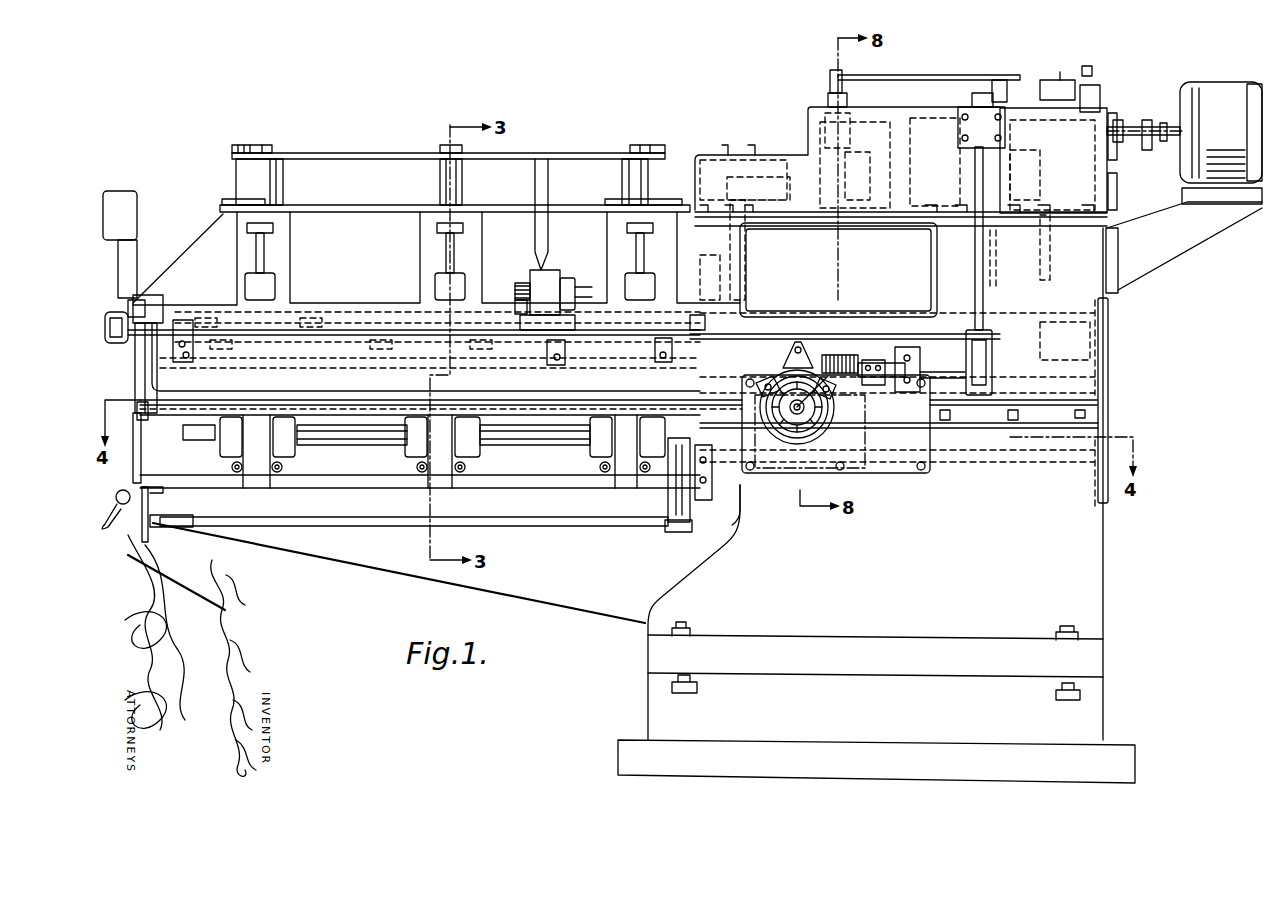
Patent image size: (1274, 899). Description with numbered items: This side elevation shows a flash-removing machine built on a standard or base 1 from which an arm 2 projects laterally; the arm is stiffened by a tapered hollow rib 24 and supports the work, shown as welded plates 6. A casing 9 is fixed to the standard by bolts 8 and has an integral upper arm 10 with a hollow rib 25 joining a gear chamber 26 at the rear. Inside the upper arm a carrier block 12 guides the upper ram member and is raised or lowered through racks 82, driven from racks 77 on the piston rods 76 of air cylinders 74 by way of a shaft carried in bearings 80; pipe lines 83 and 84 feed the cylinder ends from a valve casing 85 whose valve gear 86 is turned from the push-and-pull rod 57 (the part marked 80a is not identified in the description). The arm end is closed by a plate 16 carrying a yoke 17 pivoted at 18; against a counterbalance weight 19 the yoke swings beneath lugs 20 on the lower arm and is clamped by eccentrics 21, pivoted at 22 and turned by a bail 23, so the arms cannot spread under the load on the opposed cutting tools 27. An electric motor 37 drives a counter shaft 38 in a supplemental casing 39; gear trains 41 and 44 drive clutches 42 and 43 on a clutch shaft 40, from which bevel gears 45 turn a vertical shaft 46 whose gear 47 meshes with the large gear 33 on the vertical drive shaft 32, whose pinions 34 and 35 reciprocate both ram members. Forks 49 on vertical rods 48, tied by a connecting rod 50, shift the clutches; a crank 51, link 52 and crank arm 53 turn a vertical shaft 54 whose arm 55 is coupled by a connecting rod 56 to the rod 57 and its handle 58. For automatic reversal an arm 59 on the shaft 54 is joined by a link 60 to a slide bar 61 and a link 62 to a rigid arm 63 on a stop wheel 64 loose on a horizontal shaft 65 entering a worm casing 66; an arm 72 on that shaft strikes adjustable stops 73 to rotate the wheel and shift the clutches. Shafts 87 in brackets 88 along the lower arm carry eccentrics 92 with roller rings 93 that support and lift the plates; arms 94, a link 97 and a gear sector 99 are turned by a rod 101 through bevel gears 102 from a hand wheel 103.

The standard or base 1 is at (1104, 573).
The arm or horn 2 is at (583, 487).
The plates 6 is at (355, 422).
The bolts 8 is at (1014, 410).
The casing 9 is at (1108, 398).
The rigid arm 10 is at (176, 300).
The carrier block 12 is at (372, 345).
The plate 16 is at (142, 372).
The yoke 17 is at (138, 415).
The pivot 18 is at (140, 298).
The counterbalance weight 19 is at (126, 210).
The lugs 20 is at (160, 488).
The eccentrics 21 is at (116, 493).
The pivot 22 is at (148, 500).
The bail 23 is at (117, 519).
The hollow rib 24 is at (372, 572).
The hollow rib 25 is at (346, 206).
The gear chamber 26 is at (1120, 268).
The cutting tool 27 is at (195, 415).
The vertical drive shaft 32 is at (855, 470).
The large gear wheel 33 is at (898, 285).
The pinion 34 is at (862, 495).
The pinion 35 is at (890, 385).
The electric motor 37 is at (1221, 143).
The counter shaft 38 is at (1035, 120).
The supplemental casing 39 is at (1092, 163).
The clutch shaft 40 is at (807, 183).
The train of gears 41 is at (935, 120).
The clutch 42 is at (893, 120).
The clutch 43 is at (1030, 125).
The gear train 44 is at (993, 255).
The bevel gears 45 is at (770, 190).
The vertical shaft 46 is at (750, 248).
The gear 47 is at (705, 276).
The vertical rod 48 is at (830, 72).
The fork 49 is at (320, 330).
The connecting rod 50 is at (907, 75).
The crank 51 is at (1100, 95).
The link 52 is at (1060, 80).
The crank arm 53 is at (982, 93).
The vertical shaft 54 is at (975, 258).
The arm 55 is at (992, 338).
The connecting rod 56 is at (950, 333).
The push and pull rod 57 is at (355, 330).
The handle 58 is at (112, 314).
The arm 59 is at (978, 392).
The link 60 is at (956, 407).
The slide bar 61 is at (922, 362).
The link 62 is at (850, 355).
The rigid arm 63 is at (792, 358).
The rotatable stop member 64 is at (840, 428).
The horizontal shaft 65 is at (792, 413).
The worm casing 66 is at (905, 445).
The arm 72 is at (788, 386).
The adjustable stops 73 is at (756, 385).
The air cylinders 74 is at (284, 180).
The piston rod 76 is at (268, 252).
The rack 77 is at (282, 322).
The bearings 80 is at (308, 330).
The gear 80a is at (515, 308).
The racks 82 is at (245, 378).
The pipe line 83 is at (568, 153).
The pipe line 84 is at (580, 206).
The valve casing 85 is at (562, 285).
The gear 86 is at (520, 283).
The shaft 87 is at (375, 432).
The brackets 88 is at (185, 320).
The eccentric 92 is at (483, 447).
The ring 93 is at (478, 460).
The arm 94 is at (700, 467).
The link 97 is at (710, 490).
The gear sector 99 is at (668, 497).
The operating shaft or rod 101 is at (328, 527).
The bevel gears 102 is at (672, 532).
The hand wheel 103 is at (152, 540).